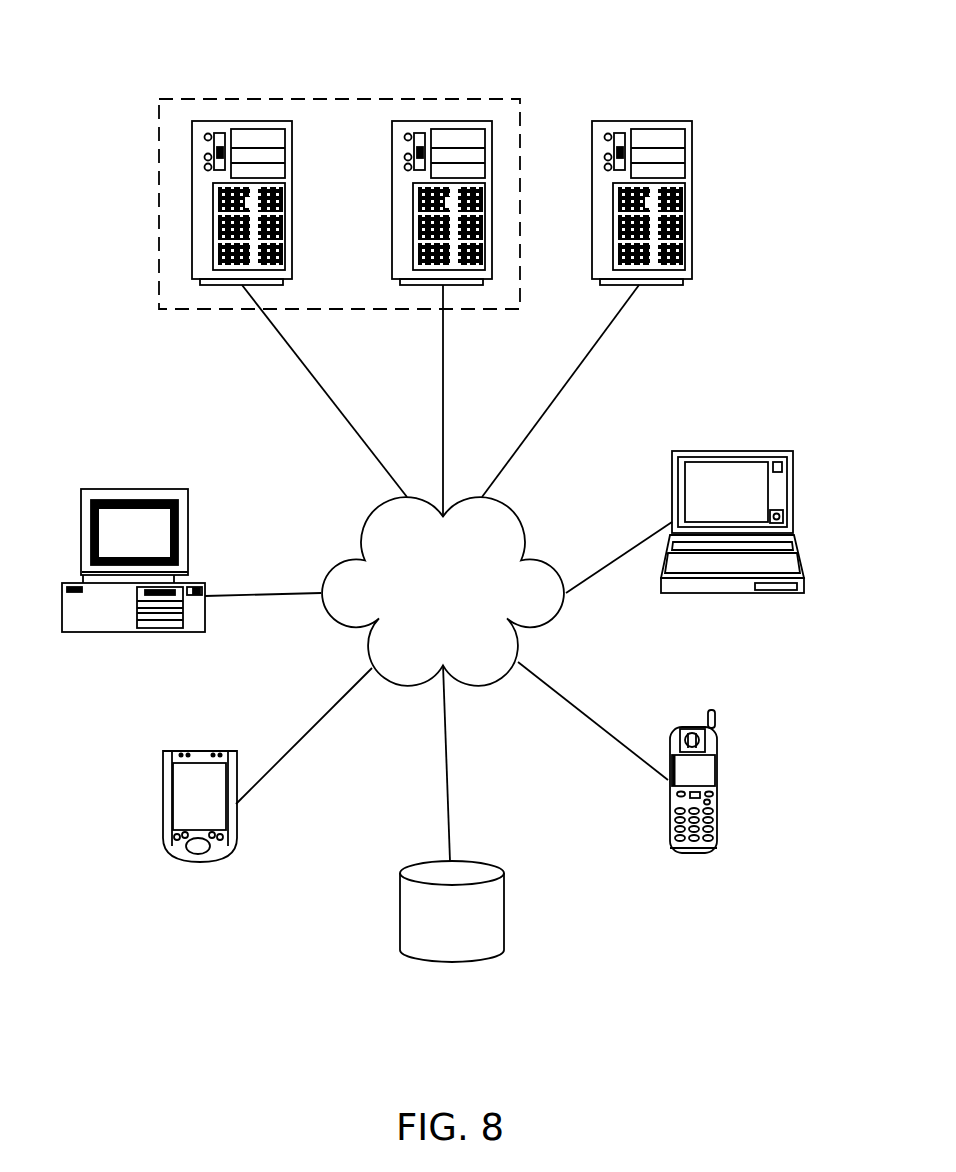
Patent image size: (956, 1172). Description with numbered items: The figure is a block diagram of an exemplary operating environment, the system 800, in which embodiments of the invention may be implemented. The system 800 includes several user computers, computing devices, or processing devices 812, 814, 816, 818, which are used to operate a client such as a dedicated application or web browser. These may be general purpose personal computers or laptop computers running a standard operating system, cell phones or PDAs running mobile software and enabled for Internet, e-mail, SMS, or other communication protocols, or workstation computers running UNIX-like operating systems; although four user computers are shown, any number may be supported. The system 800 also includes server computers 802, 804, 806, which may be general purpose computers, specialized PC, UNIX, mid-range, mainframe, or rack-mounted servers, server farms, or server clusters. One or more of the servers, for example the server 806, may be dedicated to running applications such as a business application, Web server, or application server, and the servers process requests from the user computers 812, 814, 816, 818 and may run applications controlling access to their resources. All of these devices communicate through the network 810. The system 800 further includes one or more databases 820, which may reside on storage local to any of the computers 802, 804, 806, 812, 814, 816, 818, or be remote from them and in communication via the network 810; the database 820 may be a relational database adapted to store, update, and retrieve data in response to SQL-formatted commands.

The system 800 is at (778, 128).
The server computer 802 is at (226, 121).
The server computer 804 is at (439, 121).
The server computer 806 is at (691, 202).
The network 810 is at (443, 591).
The user computer 812 is at (132, 489).
The user computer 814 is at (728, 451).
The user computer 816 is at (689, 853).
The user computer 818 is at (198, 862).
The database 820 is at (452, 813).